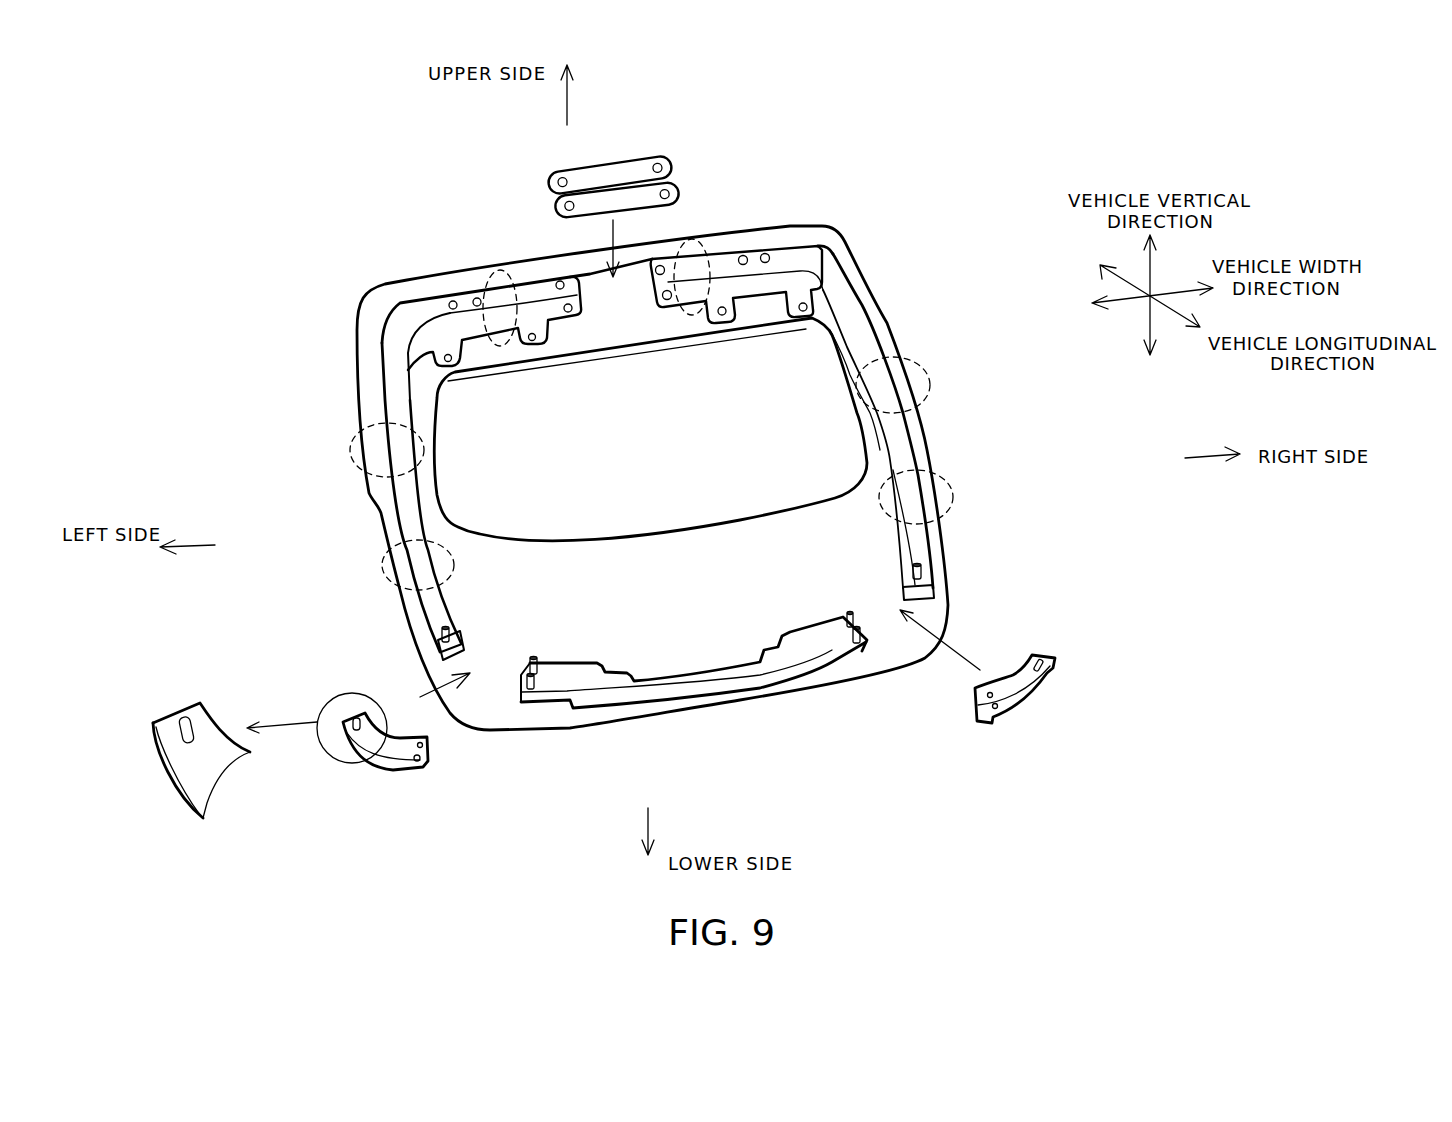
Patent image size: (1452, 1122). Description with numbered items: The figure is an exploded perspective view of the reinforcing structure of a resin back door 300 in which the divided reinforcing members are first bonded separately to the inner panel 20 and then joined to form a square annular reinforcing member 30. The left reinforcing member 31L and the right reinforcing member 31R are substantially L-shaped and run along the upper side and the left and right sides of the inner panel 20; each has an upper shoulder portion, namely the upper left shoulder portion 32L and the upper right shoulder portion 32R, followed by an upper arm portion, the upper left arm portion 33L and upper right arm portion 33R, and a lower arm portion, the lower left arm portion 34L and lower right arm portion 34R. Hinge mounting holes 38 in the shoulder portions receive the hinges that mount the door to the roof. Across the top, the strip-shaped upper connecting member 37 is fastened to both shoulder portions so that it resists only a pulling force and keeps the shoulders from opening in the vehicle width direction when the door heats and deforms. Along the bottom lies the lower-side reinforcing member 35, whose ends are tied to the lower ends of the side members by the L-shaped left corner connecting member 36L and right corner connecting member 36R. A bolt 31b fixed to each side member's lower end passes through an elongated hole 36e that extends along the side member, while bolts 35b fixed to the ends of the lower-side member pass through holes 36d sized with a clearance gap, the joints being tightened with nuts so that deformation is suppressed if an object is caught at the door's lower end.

The inner panel 20 is at (365, 298).
The reinforcing member 30 is at (808, 230).
The resin back door 300 is at (970, 203).
The left reinforcing member 31L is at (368, 398).
The right reinforcing member 31R is at (881, 323).
The bolt 31b is at (925, 573).
The upper left shoulder portion 32L is at (494, 323).
The upper right shoulder portion 32R is at (700, 250).
The upper left arm portion 33L is at (350, 448).
The upper right arm portion 33R is at (930, 380).
The lower left arm portion 34L is at (380, 565).
The lower right arm portion 34R is at (950, 478).
The lower-side reinforcing member 35 is at (695, 700).
The bolts 35b is at (540, 660).
The left corner connecting member 36L is at (380, 775).
The right corner connecting member 36R is at (1040, 703).
The holes 36d is at (432, 752).
The elongated hole 36e is at (345, 762).
The upper connecting member 37 is at (638, 163).
The hinge mounting holes 38 is at (765, 252).